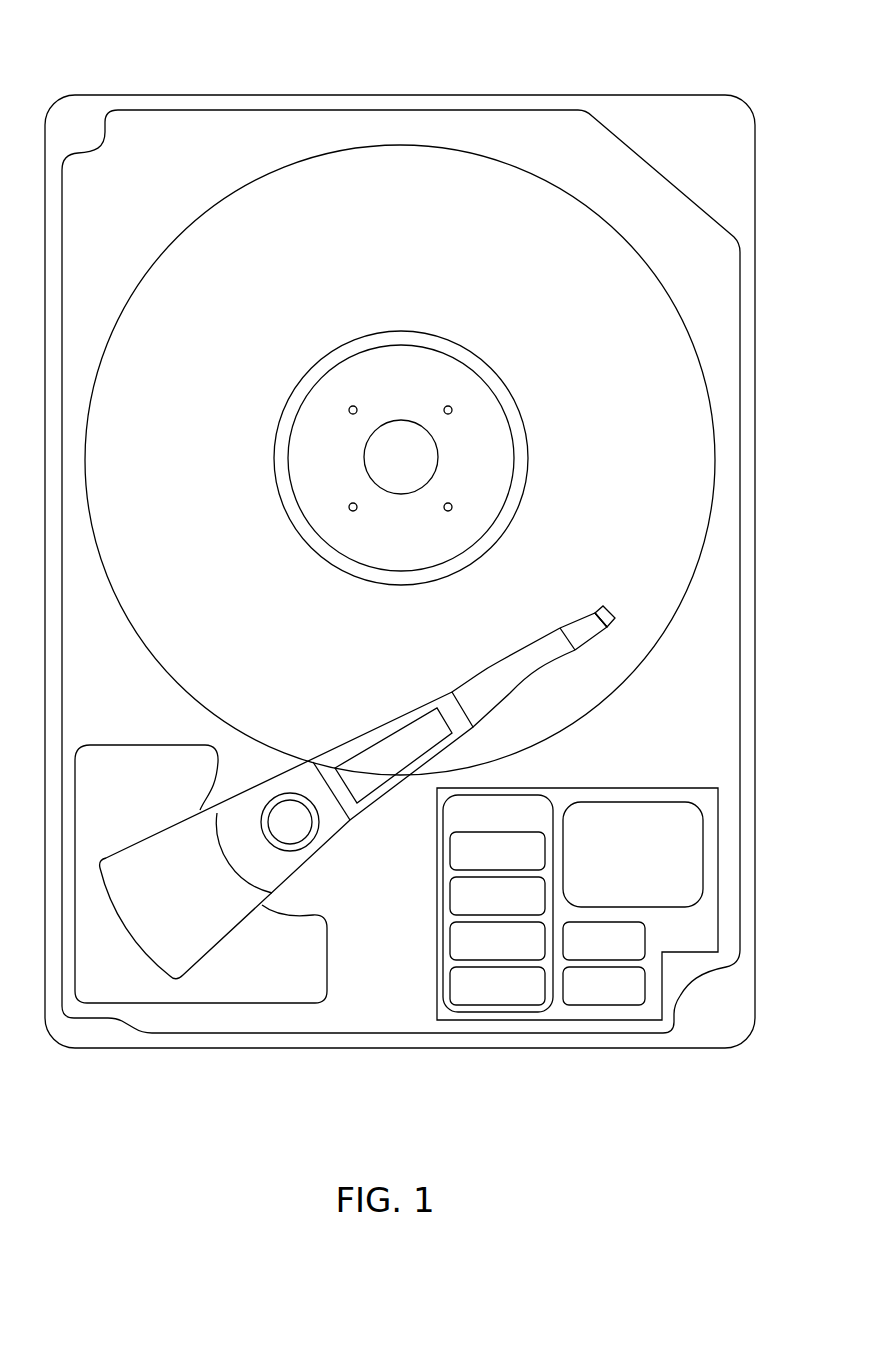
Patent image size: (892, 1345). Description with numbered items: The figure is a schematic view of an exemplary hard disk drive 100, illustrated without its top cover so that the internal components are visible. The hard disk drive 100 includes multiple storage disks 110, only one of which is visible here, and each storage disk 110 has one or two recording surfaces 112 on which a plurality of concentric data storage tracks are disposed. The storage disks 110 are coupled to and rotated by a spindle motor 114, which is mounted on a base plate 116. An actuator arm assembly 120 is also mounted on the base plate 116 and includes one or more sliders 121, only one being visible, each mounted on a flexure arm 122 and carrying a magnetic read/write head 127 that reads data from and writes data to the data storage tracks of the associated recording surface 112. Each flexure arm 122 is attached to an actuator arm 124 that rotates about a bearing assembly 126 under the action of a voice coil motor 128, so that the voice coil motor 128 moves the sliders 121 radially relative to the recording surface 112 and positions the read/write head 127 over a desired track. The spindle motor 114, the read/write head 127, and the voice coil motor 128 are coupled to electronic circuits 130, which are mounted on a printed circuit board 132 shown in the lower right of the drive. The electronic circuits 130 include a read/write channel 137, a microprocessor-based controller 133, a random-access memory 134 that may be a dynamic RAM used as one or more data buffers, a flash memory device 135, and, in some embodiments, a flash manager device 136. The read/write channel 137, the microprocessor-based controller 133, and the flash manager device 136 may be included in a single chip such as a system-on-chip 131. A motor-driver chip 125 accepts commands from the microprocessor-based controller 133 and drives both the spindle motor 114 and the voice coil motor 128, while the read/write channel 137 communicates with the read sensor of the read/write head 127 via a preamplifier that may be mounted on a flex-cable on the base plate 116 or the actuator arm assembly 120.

The hard disk drive 100 is at (134, 46).
The storage disk 110 is at (177, 233).
The recording surface 112 is at (167, 440).
The spindle motor 114 is at (500, 400).
The base plate 116 is at (743, 597).
The actuator arm assembly 120 is at (338, 690).
The slider 121 is at (618, 604).
The flexure arm 122 is at (571, 617).
The actuator arm 124 is at (473, 677).
The motor-driver chip 125 is at (585, 953).
The bearing assembly 126 is at (320, 868).
The magnetic read/write head 127 is at (607, 576).
The voice coil motor 128 is at (330, 945).
The electronic circuits 130 is at (590, 787).
The system-on-chip 131 is at (478, 829).
The printed circuit board 132 is at (660, 786).
The microprocessor-based controller 133 is at (478, 865).
The random-access memory 134 is at (585, 997).
The flash memory device 135 is at (613, 867).
The flash manager device 136 is at (478, 909).
The read/write channel 137 is at (478, 953).